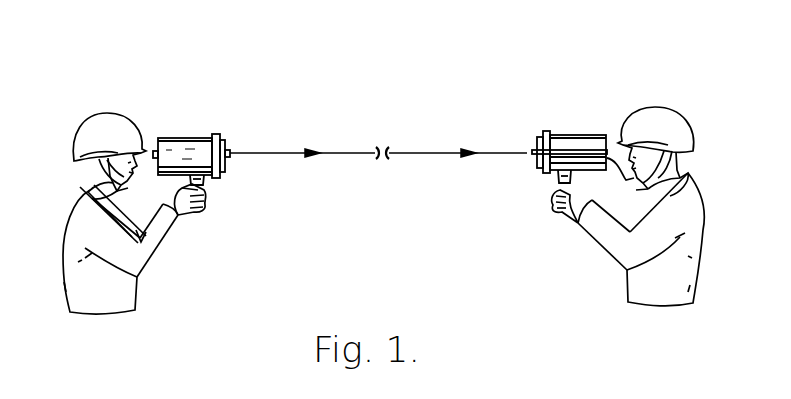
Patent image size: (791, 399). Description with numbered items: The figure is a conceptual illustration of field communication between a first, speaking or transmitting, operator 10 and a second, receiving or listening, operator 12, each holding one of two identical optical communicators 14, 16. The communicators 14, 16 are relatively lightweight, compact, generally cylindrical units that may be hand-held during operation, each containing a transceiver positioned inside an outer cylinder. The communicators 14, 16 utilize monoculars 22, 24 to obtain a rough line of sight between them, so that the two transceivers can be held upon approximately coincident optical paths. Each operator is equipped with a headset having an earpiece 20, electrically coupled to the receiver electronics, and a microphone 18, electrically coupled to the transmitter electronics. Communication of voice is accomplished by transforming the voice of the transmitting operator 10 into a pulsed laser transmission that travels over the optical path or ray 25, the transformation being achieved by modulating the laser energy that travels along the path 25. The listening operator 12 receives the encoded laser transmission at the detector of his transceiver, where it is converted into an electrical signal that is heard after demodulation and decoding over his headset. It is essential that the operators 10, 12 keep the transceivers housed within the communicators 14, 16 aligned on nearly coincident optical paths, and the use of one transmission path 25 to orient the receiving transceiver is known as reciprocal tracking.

The first operator 10 is at (147, 86).
The second operator 12 is at (669, 91).
The optical communicator 14 is at (212, 125).
The optical communicator 16 is at (581, 122).
The microphone 18 is at (162, 242).
The earpiece 20 is at (90, 165).
The monocular 22 is at (228, 158).
The monocular 24 is at (546, 175).
The optical path 25 is at (433, 153).